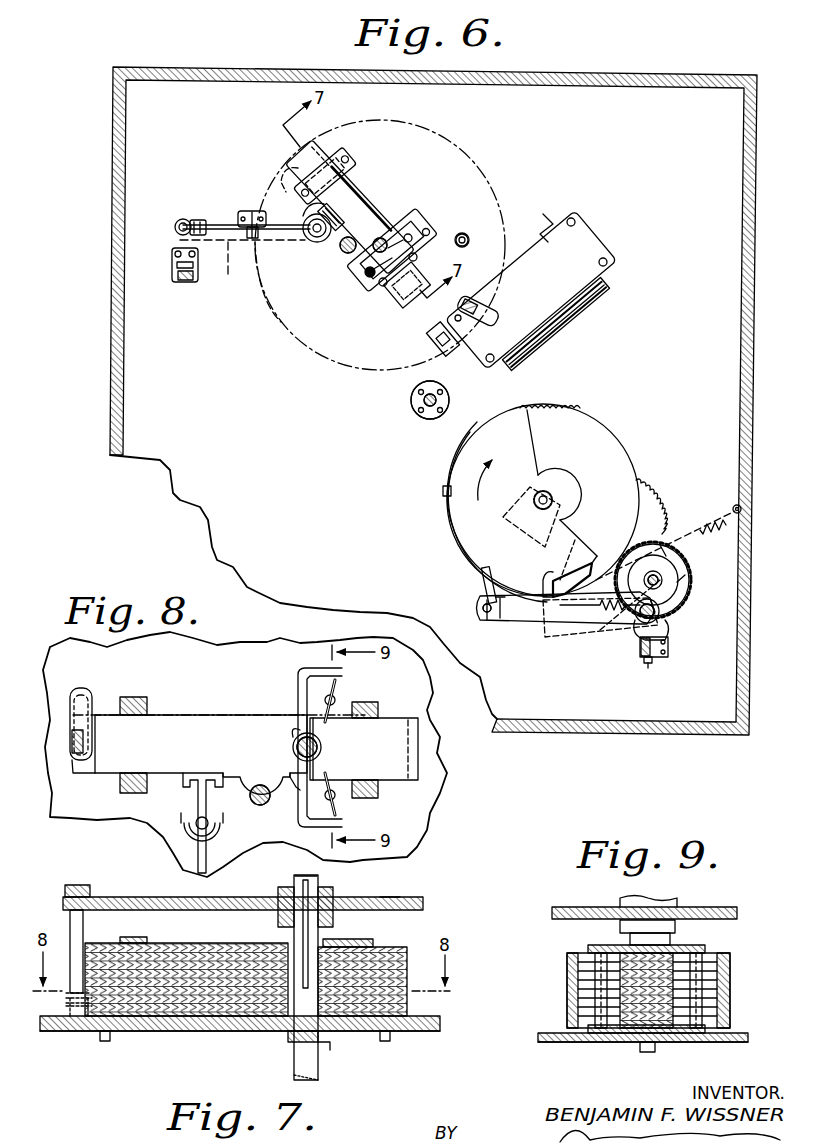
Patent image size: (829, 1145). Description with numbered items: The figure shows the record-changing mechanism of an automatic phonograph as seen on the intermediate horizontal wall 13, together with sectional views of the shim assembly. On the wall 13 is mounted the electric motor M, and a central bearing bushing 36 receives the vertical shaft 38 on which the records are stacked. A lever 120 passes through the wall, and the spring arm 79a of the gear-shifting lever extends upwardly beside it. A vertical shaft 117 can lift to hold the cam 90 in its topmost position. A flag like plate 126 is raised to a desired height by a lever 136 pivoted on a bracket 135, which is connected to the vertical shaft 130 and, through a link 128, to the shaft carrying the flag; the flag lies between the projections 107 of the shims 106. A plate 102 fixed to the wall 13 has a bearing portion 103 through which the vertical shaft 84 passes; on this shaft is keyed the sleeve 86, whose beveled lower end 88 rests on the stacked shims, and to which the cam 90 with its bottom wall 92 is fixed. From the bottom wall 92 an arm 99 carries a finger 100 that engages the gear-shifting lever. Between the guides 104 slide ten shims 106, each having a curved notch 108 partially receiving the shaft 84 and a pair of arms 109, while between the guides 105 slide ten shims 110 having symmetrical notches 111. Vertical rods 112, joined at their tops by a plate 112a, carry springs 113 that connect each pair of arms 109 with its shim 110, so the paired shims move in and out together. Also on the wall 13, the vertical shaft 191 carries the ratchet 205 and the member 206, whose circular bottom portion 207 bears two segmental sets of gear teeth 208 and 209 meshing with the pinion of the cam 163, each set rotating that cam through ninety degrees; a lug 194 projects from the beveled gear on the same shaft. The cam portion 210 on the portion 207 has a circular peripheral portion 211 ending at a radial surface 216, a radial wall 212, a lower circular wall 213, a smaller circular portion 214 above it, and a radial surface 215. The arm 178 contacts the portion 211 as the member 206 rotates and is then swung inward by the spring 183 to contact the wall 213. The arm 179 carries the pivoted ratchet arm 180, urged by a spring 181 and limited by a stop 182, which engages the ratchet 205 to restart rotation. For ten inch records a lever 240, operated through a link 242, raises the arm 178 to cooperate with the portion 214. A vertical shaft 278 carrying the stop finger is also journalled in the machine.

In FIG. 6, the intermediate horizontal wall 13 is at (120, 346).
In FIG. 7, the intermediate horizontal wall 13 is at (433, 1035).
In FIG. 9, the intermediate horizontal wall 13 is at (736, 1045).
In FIG. 6, the lever 136 is at (222, 224).
In FIG. 6, the vertical shaft 130 is at (180, 224).
In FIG. 6, the bracket 135 is at (253, 210).
In FIG. 6, the link 128 is at (242, 281).
In FIG. 6, the lever 120 is at (178, 286).
In FIG. 6, the shims 106 is at (340, 200).
In FIG. 8, the shims 106 is at (235, 713).
In FIG. 7, the shims 106 is at (175, 1000).
In FIG. 6, the flag like plate 126 is at (325, 222).
In FIG. 8, the flag like plate 126 is at (206, 778).
In FIG. 6, the projections 107 is at (325, 245).
In FIG. 8, the projections 107 is at (190, 800).
In FIG. 6, the vertical shaft 117 is at (342, 251).
In FIG. 8, the vertical shaft 117 is at (265, 805).
In FIG. 6, the arms 109 is at (405, 232).
In FIG. 8, the arms 109 is at (340, 676).
In FIG. 6, the vertical rods 112 is at (412, 240).
In FIG. 8, the vertical rods 112 is at (335, 700).
In FIG. 9, the vertical rods 112 is at (700, 966).
In FIG. 6, the vertical shaft 278 is at (472, 232).
In FIG. 6, the electric motor M is at (530, 291).
In FIG. 6, the finger 100 is at (488, 318).
In FIG. 8, the finger 100 is at (85, 700).
In FIG. 7, the finger 100 is at (75, 1010).
In FIG. 6, the spring arm 79a is at (430, 345).
In FIG. 6, the vertical shaft 38 is at (420, 408).
In FIG. 6, the bearing bushing 36 is at (419, 413).
In FIG. 6, the circular bottom portion 207 is at (485, 435).
In FIG. 6, the segmental gear teeth 209 is at (550, 404).
In FIG. 6, the segmental gear teeth 208 is at (645, 478).
In FIG. 6, the radial surface 216 is at (540, 442).
In FIG. 6, the ratchet 205 is at (551, 490).
In FIG. 6, the vertical shaft 191 is at (538, 494).
In FIG. 6, the circular portion 214 is at (575, 535).
In FIG. 6, the radial surface 215 is at (585, 548).
In FIG. 6, the circular wall 213 is at (596, 565).
In FIG. 6, the radial wall 212 is at (548, 582).
In FIG. 6, the member 206 is at (447, 455).
In FIG. 6, the radial projecting lug 194 is at (443, 492).
In FIG. 6, the cam portion 210 is at (468, 520).
In FIG. 6, the circular peripheral portion 211 is at (462, 549).
In FIG. 6, the ratchet arm 180 is at (482, 595).
In FIG. 6, the arm 179 is at (530, 620).
In FIG. 6, the stop 182 is at (486, 615).
In FIG. 6, the spring 181 is at (498, 622).
In FIG. 6, the arm 178 is at (580, 635).
In FIG. 6, the spring 183 is at (700, 520).
In FIG. 6, the cam 163 is at (690, 602).
In FIG. 6, the lever 240 is at (640, 648).
In FIG. 6, the link 242 is at (650, 666).
In FIG. 8, the arm 99 is at (76, 745).
In FIG. 7, the arm 99 is at (70, 920).
In FIG. 8, the guides 104 is at (140, 697).
In FIG. 8, the springs 113 is at (300, 778).
In FIG. 8, the notches 111 is at (321, 745).
In FIG. 8, the vertical shaft 84 is at (318, 755).
In FIG. 7, the vertical shaft 84 is at (315, 1080).
In FIG. 8, the curved notch 108 is at (292, 738).
In FIG. 8, the shims 110 is at (385, 756).
In FIG. 8, the guides 105 is at (379, 712).
In FIG. 7, the bottom wall 92 is at (408, 900).
In FIG. 9, the bottom wall 92 is at (728, 908).
In FIG. 7, the cam 90 is at (390, 897).
In FIG. 7, the sleeve 86 is at (290, 933).
In FIG. 7, the plate 112a is at (380, 942).
In FIG. 9, the plate 112a is at (605, 945).
In FIG. 7, the plate 102 is at (418, 1026).
In FIG. 9, the plate 102 is at (625, 1040).
In FIG. 7, the beveled lower end 88 is at (290, 1040).
In FIG. 7, the bearing portion 103 is at (320, 1048).